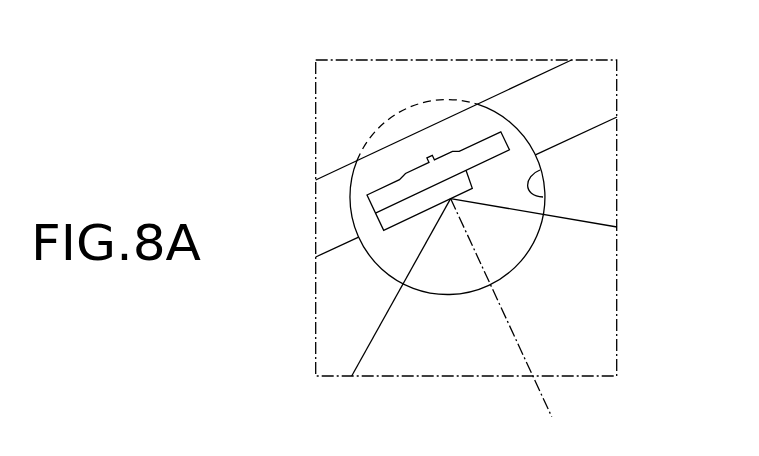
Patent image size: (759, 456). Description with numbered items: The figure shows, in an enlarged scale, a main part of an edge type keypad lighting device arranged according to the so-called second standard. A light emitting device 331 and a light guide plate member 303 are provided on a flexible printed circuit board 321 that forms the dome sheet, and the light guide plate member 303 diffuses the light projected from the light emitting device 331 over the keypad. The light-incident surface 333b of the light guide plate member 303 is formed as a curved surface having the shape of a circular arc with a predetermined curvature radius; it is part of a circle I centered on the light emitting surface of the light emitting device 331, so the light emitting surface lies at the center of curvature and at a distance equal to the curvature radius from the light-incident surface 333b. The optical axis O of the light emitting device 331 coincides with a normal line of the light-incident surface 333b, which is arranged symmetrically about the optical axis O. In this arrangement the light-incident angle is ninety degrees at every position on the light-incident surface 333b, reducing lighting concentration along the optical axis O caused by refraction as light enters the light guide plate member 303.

The circle I is at (394, 120).
The light guide plate member 303 is at (460, 353).
The flexible printed circuit board 321 is at (470, 125).
The light emitting device 331 is at (382, 188).
The light-incident surface 333b is at (540, 170).
The optical axis O is at (540, 398).